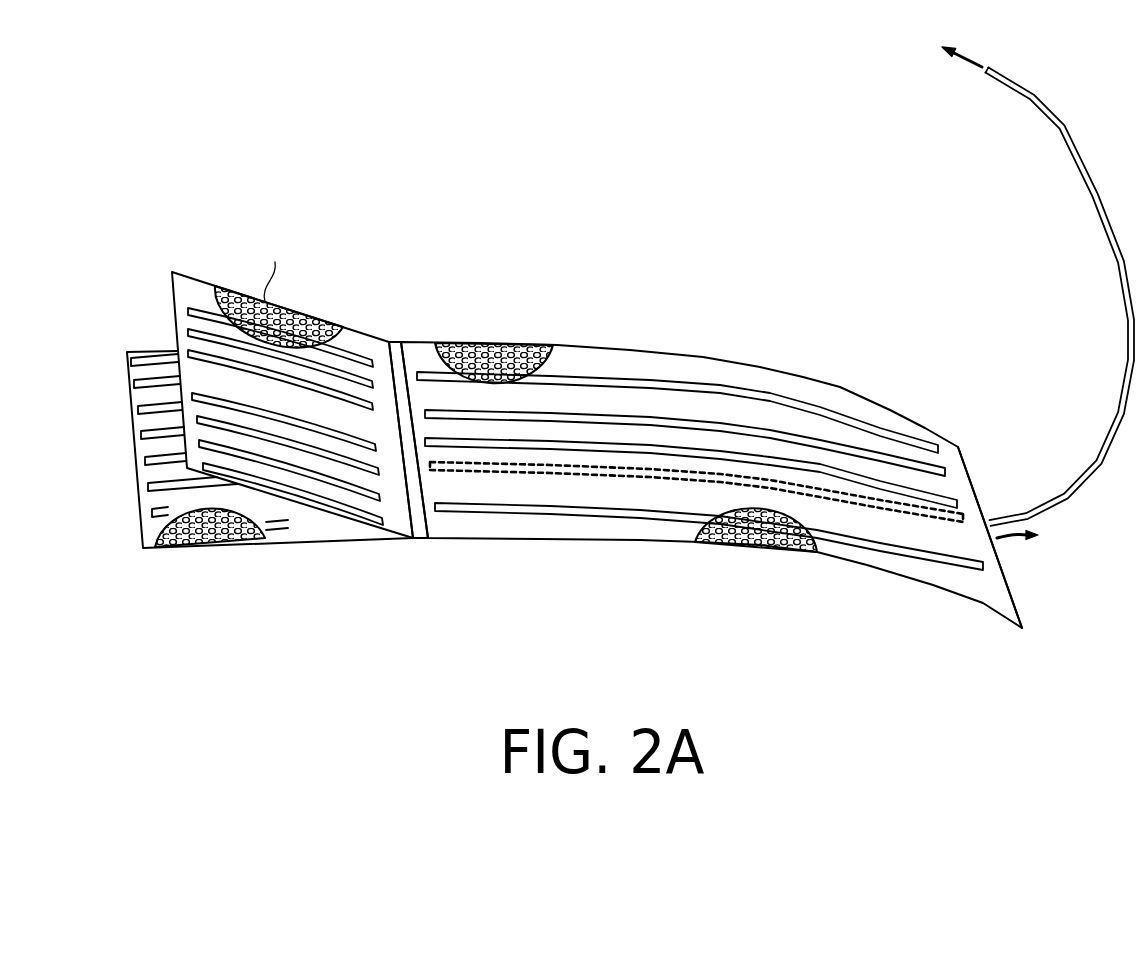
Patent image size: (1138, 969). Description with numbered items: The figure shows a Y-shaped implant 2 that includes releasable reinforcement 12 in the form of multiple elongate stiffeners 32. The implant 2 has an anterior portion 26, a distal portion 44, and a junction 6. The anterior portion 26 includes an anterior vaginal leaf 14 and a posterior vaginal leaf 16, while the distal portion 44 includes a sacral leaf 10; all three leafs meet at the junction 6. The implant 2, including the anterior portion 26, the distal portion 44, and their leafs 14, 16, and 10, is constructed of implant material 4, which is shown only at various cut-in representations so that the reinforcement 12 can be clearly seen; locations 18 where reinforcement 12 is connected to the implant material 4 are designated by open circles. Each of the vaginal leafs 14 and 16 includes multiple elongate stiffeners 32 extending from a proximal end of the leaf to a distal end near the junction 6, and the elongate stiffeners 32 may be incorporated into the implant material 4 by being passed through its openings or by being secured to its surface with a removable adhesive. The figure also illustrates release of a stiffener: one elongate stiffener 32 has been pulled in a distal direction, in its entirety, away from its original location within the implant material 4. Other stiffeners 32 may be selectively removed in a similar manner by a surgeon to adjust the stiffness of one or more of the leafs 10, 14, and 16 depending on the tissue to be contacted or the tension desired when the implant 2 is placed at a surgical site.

The implant 2 is at (391, 661).
The implant material 4 is at (497, 343).
The junction 6 is at (397, 360).
The sacral leaf 10 is at (700, 375).
The releasable reinforcement 12 is at (963, 572).
The anterior vaginal leaf 14 is at (347, 340).
The posterior vaginal leaf 16 is at (152, 452).
The connection locations 18 is at (205, 283).
The anterior portion 26 is at (199, 137).
The elongate stiffener 32 is at (142, 438).
The distal portion 44 is at (892, 249).